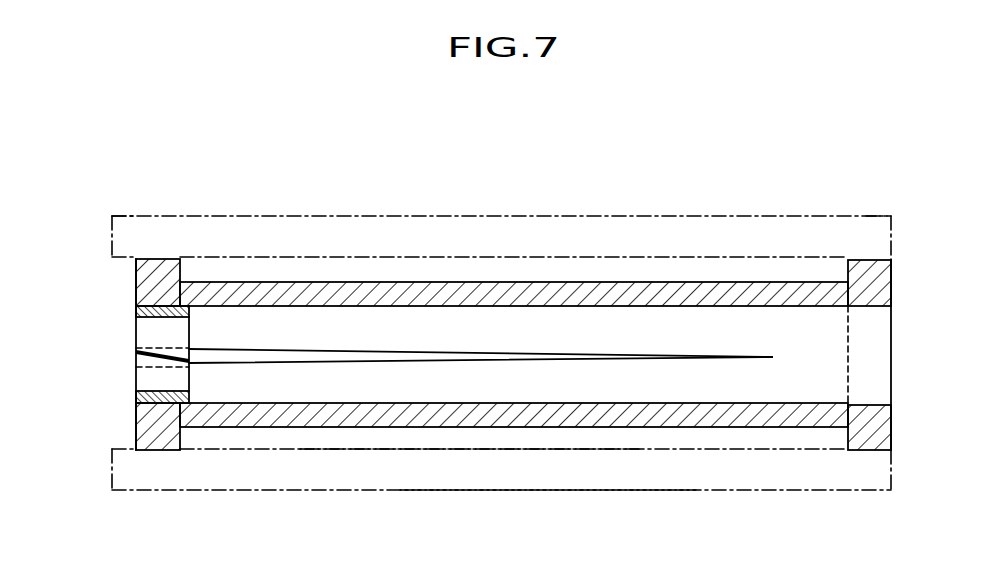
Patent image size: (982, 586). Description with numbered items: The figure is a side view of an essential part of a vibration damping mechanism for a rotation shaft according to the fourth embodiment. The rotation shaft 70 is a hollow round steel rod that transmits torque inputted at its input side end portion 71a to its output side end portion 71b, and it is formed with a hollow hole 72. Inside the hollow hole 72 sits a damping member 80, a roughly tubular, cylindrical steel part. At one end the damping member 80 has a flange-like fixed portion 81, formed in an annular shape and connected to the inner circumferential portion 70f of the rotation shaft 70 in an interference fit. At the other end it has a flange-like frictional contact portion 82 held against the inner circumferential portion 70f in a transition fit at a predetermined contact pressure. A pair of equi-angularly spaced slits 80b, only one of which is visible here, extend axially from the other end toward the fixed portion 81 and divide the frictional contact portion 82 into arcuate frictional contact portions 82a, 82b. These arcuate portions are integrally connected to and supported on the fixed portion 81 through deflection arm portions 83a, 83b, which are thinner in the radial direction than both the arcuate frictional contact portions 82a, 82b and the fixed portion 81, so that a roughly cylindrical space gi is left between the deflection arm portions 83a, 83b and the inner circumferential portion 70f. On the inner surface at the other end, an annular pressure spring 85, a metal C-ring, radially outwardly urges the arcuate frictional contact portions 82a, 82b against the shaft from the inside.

The rotation shaft 70 is at (714, 216).
The inner circumferential portion 70f is at (437, 446).
The input side end portion 71a is at (136, 226).
The output side end portion 71b is at (868, 230).
The hollow hole 72 is at (660, 447).
The damping member 80 is at (598, 272).
The slits 80b is at (455, 358).
The fixed portion 81 is at (868, 451).
The frictional contact portion 82 is at (160, 450).
The arcuate frictional contact portion 82a is at (150, 283).
The arcuate frictional contact portion 82b is at (150, 409).
The deflection arm portion 83a is at (360, 290).
The deflection arm portion 83b is at (357, 428).
The annular pressure spring 85 is at (150, 322).
The space gi is at (480, 271).